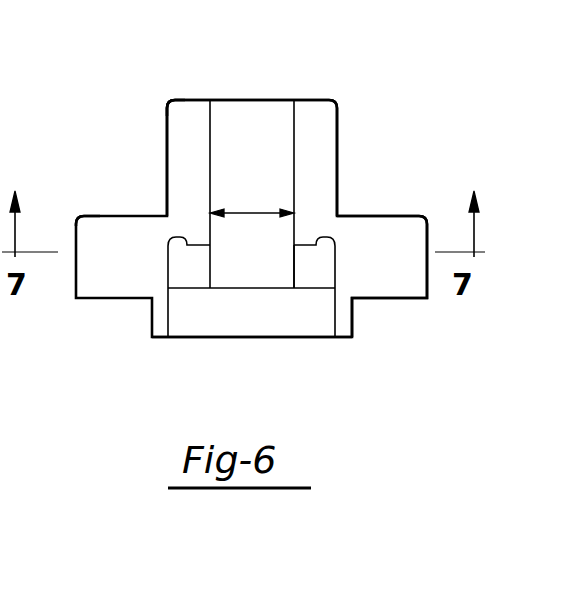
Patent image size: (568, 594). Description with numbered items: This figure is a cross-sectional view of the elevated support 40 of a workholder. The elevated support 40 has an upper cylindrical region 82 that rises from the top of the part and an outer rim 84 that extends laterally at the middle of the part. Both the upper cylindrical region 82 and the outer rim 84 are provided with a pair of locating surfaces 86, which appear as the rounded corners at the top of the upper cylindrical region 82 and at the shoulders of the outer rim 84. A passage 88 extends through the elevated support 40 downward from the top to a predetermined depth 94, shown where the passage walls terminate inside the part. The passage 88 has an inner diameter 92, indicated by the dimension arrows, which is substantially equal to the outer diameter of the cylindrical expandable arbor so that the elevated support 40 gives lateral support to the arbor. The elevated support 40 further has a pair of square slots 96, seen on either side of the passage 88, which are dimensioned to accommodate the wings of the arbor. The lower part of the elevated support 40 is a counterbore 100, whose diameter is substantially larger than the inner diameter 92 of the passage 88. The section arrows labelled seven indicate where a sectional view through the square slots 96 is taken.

The elevated support 40 is at (390, 188).
The upper cylindrical region 82 is at (177, 143).
The outer rim 84 is at (377, 277).
The locating surfaces 86 is at (196, 100).
The passage 88 is at (264, 113).
The inner diameter 92 is at (252, 201).
The predetermined depth 94 is at (292, 290).
The square slots 96 is at (182, 263).
The counterbore 100 is at (197, 325).